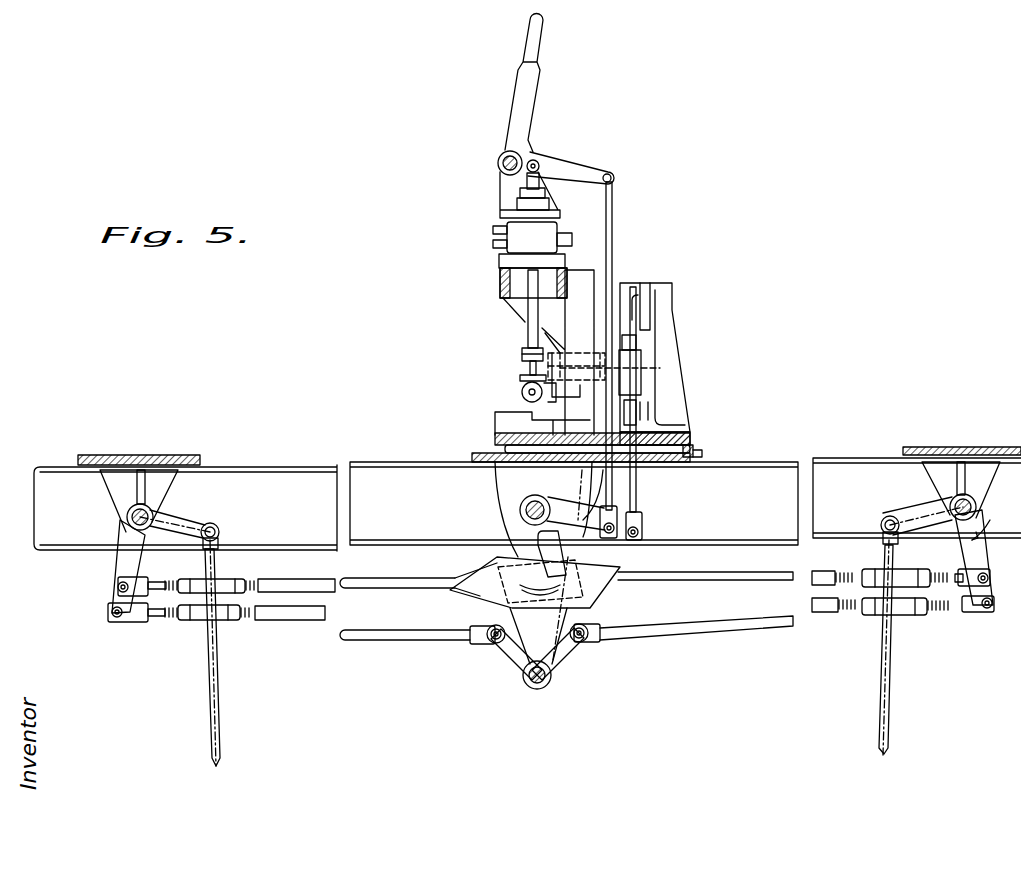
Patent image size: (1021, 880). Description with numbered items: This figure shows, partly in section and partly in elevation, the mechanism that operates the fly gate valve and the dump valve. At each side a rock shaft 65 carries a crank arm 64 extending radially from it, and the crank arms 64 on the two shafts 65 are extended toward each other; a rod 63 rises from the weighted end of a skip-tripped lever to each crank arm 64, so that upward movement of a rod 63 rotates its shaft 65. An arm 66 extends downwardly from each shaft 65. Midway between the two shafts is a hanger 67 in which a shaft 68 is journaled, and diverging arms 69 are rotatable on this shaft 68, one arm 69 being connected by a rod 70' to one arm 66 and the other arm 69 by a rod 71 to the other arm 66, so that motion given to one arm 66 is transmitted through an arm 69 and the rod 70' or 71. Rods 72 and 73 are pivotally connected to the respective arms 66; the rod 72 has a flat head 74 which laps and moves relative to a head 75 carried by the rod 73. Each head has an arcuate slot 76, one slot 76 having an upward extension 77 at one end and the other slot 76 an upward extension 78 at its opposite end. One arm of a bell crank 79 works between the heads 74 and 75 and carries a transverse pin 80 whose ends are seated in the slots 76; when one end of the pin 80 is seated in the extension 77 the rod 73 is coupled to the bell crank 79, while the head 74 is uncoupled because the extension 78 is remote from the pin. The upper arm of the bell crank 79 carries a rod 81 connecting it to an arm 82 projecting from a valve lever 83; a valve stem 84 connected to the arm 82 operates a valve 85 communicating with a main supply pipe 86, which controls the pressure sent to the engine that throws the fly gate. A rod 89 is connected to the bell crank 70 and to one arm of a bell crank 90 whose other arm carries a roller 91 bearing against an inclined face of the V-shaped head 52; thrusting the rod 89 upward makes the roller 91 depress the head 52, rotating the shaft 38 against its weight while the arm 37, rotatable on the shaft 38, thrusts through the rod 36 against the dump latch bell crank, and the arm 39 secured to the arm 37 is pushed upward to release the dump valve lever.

The valve lever 83 is at (512, 92).
The arm 82 is at (580, 172).
The valve stem 84 is at (525, 192).
The valve 85 is at (530, 240).
The rod 81 is at (612, 243).
The bell crank 90 is at (632, 307).
The roller 91 is at (622, 362).
The V-shaped head 52 is at (660, 368).
The arm 37 is at (620, 388).
The rod 89 is at (648, 414).
The rod 36 is at (690, 432).
The shaft 38 is at (528, 362).
The main supply pipe 86 is at (521, 392).
The arm 39 is at (543, 406).
The rock shaft 65 is at (128, 512).
The crank arm 64 is at (200, 518).
The arm 66 is at (125, 567).
The rod 63 is at (222, 686).
The bell crank 79 is at (590, 510).
The bell crank 70 is at (662, 413).
The rod 70' is at (683, 639).
The flat head 74 is at (600, 558).
The rod 72 is at (733, 572).
The rod 73 is at (390, 578).
The head 75 is at (482, 572).
The upward extension 77 is at (518, 556).
The upward extension 78 is at (555, 568).
The arcuate slot 76 is at (573, 597).
The transverse pin 80 is at (517, 591).
The diverging arms 69 is at (503, 649).
The hanger 67 is at (540, 632).
The shaft 68 is at (537, 684).
The rod 71 is at (370, 638).